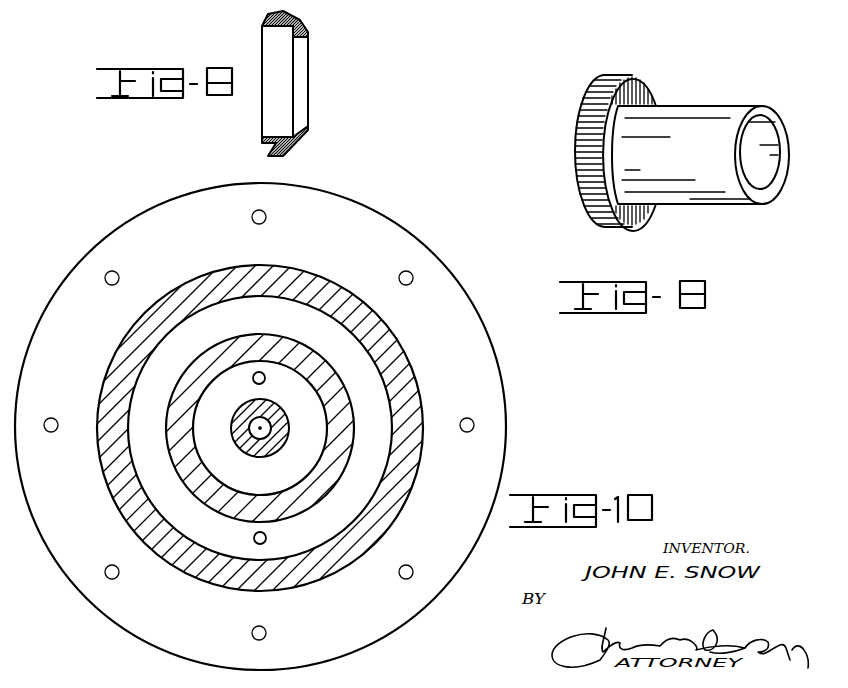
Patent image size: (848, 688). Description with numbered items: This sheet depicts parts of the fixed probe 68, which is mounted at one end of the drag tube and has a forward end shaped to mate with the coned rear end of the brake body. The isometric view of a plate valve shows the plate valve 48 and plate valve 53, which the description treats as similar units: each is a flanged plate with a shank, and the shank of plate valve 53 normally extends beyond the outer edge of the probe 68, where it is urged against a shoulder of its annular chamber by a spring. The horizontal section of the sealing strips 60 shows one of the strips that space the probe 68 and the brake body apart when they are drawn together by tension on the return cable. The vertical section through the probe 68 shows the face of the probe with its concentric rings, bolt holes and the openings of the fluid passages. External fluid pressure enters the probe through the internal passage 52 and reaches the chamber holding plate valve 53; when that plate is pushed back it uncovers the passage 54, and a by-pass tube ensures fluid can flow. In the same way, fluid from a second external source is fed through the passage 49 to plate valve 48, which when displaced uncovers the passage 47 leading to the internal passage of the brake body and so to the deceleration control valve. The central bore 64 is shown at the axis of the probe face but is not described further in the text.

In FIG. 10, the passage 47 is at (227, 470).
In FIG. 8, the plate valve 48 is at (682, 150).
In FIG. 10, the passage 49 is at (265, 380).
In FIG. 10, the internal passage 52 is at (266, 538).
In FIG. 8, the plate valve 53 is at (640, 87).
In FIG. 10, the passage 54 is at (212, 541).
In FIG. 9, the sealing strips 60 is at (296, 28).
In FIG. 10, the center hub bore 64 is at (263, 428).
In FIG. 10, the fixed probe 68 is at (398, 238).